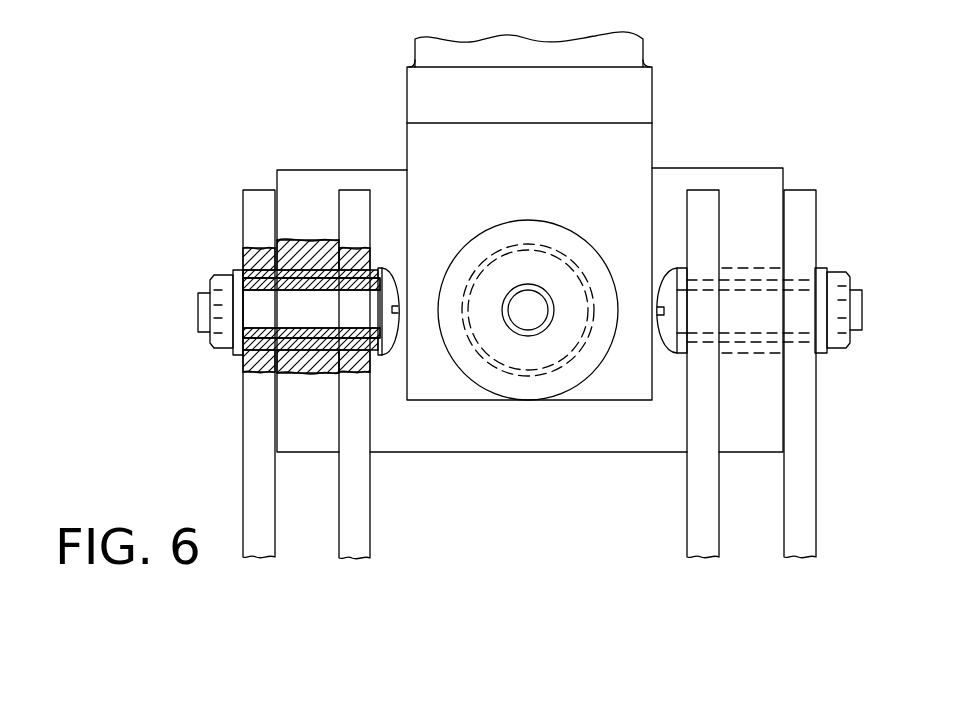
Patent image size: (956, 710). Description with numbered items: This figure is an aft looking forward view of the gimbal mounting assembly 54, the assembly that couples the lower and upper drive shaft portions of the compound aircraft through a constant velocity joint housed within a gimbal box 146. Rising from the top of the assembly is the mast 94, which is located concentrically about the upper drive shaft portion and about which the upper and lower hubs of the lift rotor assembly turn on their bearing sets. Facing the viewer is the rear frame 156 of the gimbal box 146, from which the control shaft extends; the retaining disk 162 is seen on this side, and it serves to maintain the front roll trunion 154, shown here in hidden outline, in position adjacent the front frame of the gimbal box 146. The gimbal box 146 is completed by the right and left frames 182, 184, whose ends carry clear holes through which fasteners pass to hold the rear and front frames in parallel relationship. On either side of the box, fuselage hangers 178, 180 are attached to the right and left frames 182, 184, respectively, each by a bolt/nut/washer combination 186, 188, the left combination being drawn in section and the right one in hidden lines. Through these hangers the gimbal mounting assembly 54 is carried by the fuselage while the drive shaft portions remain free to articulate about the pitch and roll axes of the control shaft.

The gimbal mounting assembly 54 is at (324, 69).
The mast 94 is at (652, 74).
The gimbal box 146 is at (298, 170).
The front roll trunion 154 is at (490, 258).
The rear frame 156 is at (498, 453).
The retaining disk 162 is at (550, 223).
The fuselage hanger 178 is at (243, 445).
The fuselage hanger 180 is at (807, 188).
The right frame 182 is at (334, 455).
The left frame 184 is at (742, 168).
The bolt/nut/washer combination 186 is at (219, 352).
The bolt/nut/washer combination 188 is at (818, 264).